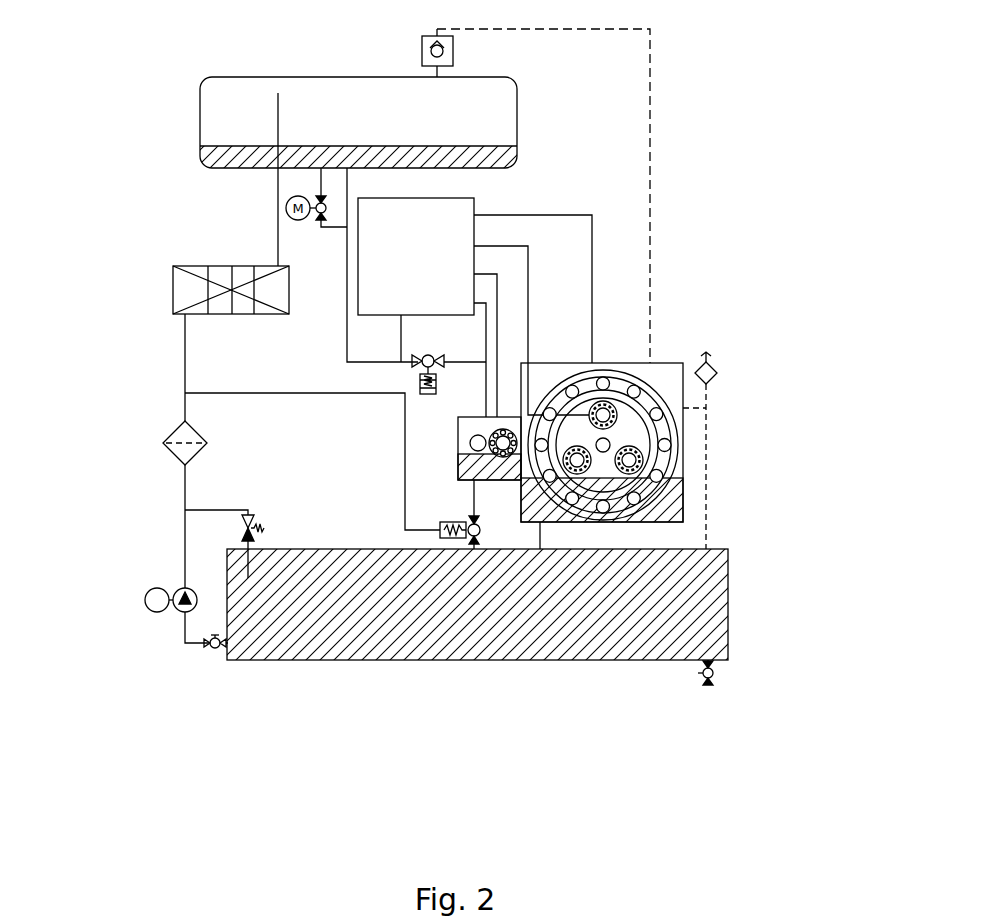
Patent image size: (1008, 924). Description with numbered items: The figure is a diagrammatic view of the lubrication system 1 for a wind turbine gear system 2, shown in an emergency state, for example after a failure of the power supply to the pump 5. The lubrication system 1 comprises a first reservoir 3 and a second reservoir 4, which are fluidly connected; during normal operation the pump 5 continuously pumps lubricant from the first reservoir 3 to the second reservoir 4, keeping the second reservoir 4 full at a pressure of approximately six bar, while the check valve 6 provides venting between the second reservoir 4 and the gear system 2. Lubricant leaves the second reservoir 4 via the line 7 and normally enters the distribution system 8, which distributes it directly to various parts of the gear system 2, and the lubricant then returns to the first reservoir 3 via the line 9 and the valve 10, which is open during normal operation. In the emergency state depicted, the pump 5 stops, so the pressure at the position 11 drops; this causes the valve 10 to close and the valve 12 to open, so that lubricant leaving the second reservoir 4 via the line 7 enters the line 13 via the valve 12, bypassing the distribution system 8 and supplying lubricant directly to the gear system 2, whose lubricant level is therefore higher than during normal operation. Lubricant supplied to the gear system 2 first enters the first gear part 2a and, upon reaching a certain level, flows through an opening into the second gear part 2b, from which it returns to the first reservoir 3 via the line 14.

The lubrication system 1 is at (808, 172).
The gear system 2 is at (660, 423).
The first gear part 2a is at (467, 428).
The second gear part 2b is at (657, 375).
The first reservoir 3 is at (303, 627).
The second reservoir 4 is at (353, 103).
The pump 5 is at (177, 615).
The check valve 6 is at (455, 51).
The line 7 is at (347, 282).
The distribution system 8 is at (442, 223).
The line 9 is at (477, 495).
The valve 10 is at (468, 530).
The position 11 is at (180, 437).
The valve 12 is at (420, 363).
The line 13 is at (472, 362).
The line 14 is at (542, 538).